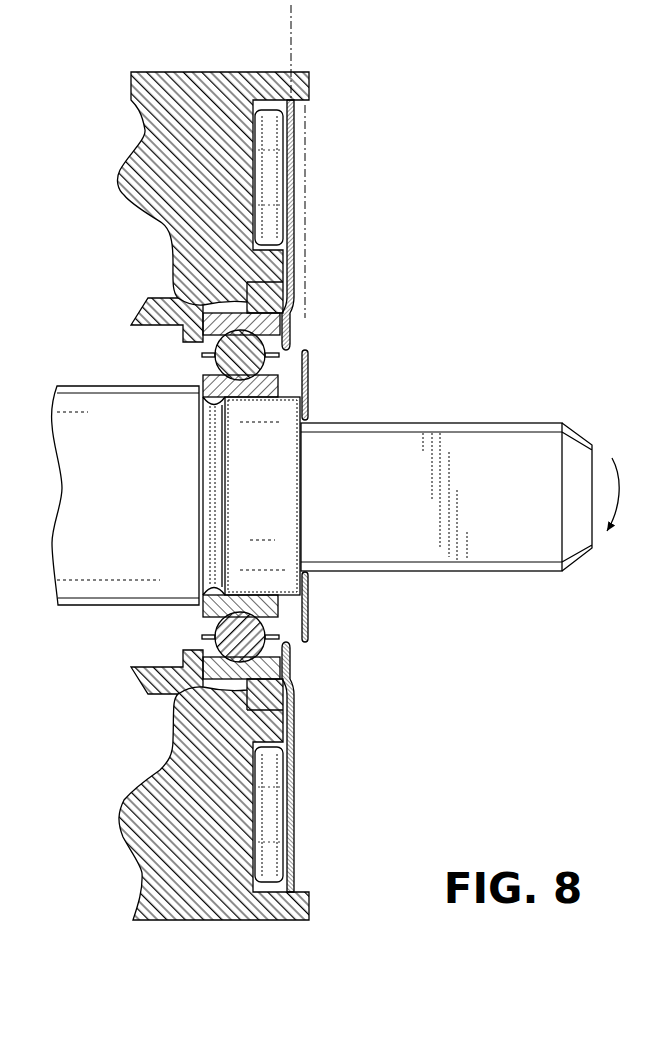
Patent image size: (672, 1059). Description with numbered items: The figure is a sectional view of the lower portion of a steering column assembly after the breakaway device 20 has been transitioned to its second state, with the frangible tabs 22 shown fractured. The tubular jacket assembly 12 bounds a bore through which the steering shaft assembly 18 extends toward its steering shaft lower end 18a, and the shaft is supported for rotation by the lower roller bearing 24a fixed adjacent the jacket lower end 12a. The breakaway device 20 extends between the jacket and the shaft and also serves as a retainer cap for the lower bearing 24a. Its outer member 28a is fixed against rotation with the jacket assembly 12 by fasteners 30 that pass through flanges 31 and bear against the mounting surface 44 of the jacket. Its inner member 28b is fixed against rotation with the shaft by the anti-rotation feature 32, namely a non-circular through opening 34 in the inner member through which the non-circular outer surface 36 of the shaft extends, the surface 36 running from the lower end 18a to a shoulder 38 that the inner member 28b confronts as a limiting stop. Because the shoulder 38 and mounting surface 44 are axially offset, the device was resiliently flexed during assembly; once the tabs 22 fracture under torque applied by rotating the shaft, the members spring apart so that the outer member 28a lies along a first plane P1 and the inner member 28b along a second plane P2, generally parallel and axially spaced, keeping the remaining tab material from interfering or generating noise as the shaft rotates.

The tubular jacket assembly 12 is at (193, 88).
The jacket lower end 12a is at (310, 88).
The steering shaft assembly 18 is at (84, 386).
The steering shaft lower end 18a is at (591, 451).
The breakaway device 20 is at (309, 716).
The frangible tab 22 is at (296, 346).
The lower roller bearing 24a is at (166, 643).
The outer member 28a is at (301, 755).
The inner member 28b is at (308, 375).
The fastener 30 is at (273, 110).
The flange 31 is at (294, 167).
The anti-rotation feature 32 is at (331, 588).
The non-circular through opening 34 is at (308, 562).
The non-circular outer surface 36 is at (314, 420).
The shoulder 38 is at (302, 458).
The mounting surface 44 is at (259, 201).
The first plane P1 is at (292, 50).
The second plane P2 is at (304, 140).